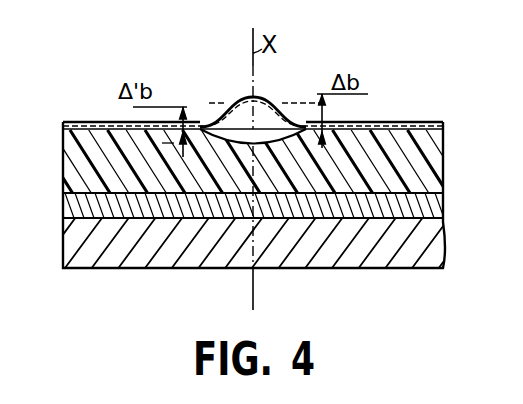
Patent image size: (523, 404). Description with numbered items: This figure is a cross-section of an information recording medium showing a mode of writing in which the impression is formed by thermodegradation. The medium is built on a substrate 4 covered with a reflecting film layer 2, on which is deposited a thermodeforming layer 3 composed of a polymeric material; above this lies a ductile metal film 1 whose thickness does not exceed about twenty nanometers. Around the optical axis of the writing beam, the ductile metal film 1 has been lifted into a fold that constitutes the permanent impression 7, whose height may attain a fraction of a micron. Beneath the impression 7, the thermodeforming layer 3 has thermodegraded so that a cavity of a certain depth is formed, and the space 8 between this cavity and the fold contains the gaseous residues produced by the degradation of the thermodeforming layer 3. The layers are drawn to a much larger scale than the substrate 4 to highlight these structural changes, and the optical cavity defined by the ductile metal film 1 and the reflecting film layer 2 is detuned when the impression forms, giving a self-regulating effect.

The ductile metal film 1 is at (86, 123).
The reflecting film layer 2 is at (445, 173).
The thermodeforming layer 3 is at (80, 162).
The substrate 4 is at (63, 246).
The permanent impression 7 is at (258, 100).
The space 8 is at (233, 124).